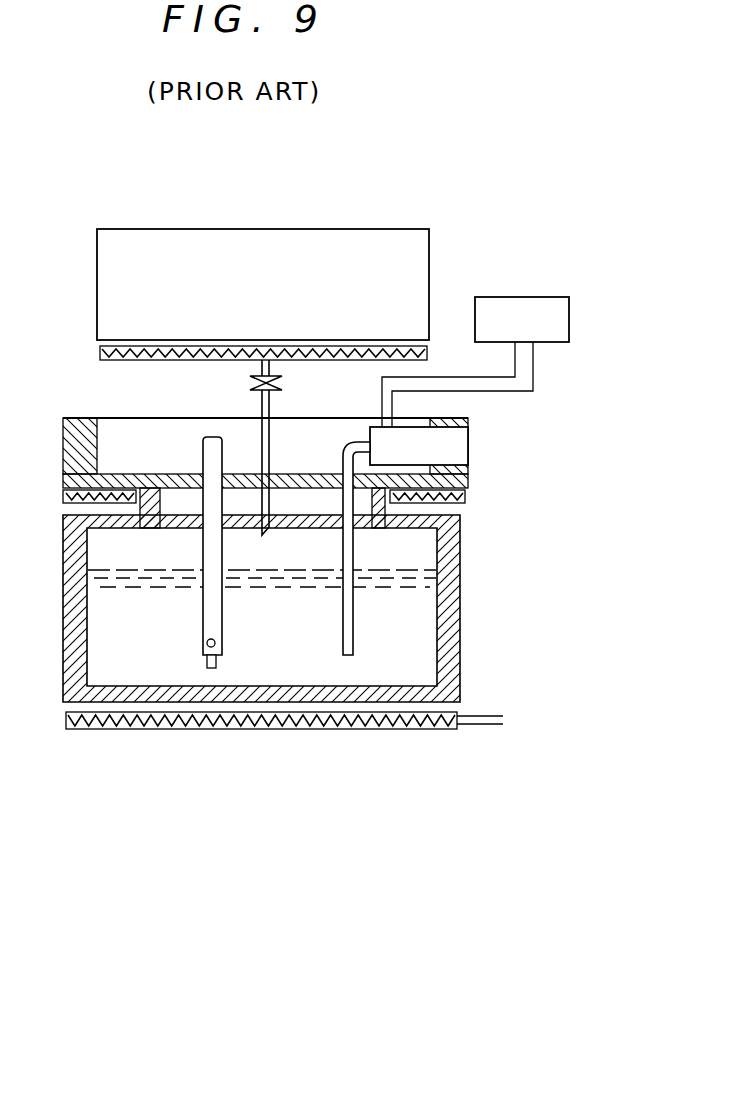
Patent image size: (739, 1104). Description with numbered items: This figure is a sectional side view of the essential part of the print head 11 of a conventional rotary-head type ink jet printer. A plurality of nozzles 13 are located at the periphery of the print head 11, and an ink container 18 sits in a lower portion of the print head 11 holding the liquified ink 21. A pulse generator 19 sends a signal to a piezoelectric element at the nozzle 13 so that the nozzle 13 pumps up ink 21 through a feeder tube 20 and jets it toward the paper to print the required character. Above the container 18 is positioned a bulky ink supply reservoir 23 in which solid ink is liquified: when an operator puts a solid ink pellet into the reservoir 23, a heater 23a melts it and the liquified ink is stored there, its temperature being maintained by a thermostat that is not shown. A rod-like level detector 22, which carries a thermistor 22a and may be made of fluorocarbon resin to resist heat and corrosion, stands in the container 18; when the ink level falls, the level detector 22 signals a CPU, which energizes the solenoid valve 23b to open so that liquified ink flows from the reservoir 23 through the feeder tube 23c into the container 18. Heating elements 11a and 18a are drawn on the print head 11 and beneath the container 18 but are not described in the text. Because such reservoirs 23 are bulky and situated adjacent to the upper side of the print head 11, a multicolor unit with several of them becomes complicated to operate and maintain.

The print head 11 is at (78, 418).
The heater 11a is at (466, 497).
The nozzle 13 is at (470, 441).
The ink container 18 is at (461, 636).
The heater 18a is at (298, 730).
The pulse generator 19 is at (524, 297).
The feeder tube 20 is at (354, 637).
The ink 21 is at (430, 577).
The level detector 22 is at (203, 447).
The thermistor 22a is at (216, 643).
The ink supply reservoir 23 is at (372, 229).
The heater 23a is at (186, 360).
The solenoid valve 23b is at (283, 383).
The feeder tube 23c is at (270, 443).